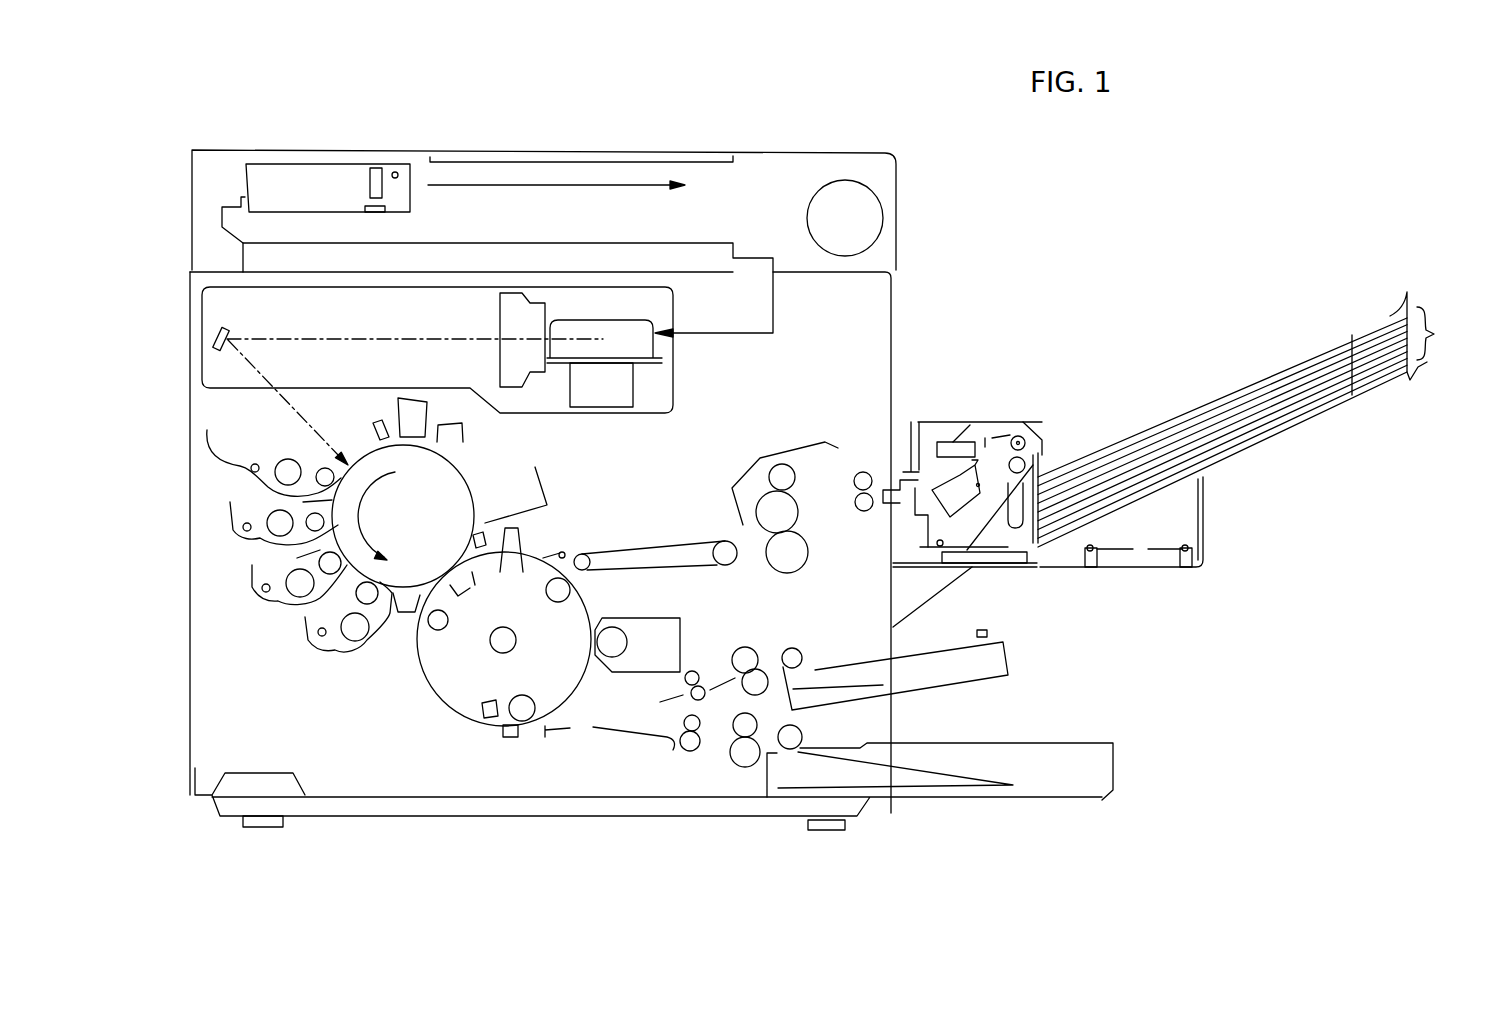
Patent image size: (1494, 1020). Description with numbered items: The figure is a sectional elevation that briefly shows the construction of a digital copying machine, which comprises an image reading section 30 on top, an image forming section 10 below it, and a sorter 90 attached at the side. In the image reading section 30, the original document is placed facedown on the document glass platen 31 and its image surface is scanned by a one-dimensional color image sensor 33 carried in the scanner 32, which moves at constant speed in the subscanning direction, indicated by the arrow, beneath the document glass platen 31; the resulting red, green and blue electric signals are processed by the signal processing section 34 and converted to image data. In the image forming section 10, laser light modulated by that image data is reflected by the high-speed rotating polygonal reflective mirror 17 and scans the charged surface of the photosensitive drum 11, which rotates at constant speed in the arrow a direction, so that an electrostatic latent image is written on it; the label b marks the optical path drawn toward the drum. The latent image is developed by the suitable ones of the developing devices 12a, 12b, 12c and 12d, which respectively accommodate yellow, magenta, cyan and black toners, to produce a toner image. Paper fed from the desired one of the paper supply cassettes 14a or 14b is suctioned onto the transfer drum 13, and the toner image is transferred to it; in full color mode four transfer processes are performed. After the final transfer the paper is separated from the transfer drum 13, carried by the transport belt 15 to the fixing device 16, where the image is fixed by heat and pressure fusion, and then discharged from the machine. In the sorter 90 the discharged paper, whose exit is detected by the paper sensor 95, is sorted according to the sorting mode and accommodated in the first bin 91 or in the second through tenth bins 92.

The image forming section 10 is at (657, 527).
The photosensitive drum 11 is at (427, 541).
The developing device 12a is at (274, 451).
The developing device 12b is at (223, 527).
The developing device 12c is at (245, 587).
The developing device 12d is at (352, 655).
The transfer drum 13 is at (448, 707).
The paper supply cassette 14a is at (997, 658).
The paper supply cassette 14b is at (1060, 757).
The transport belt 15 is at (650, 570).
The fixing device 16 is at (752, 460).
The polygonal reflective mirror 17 is at (640, 342).
The image reading section 30 is at (763, 224).
The document glass platen 31 is at (660, 158).
The scanner 32 is at (275, 164).
The one-dimensional color image sensor 33 is at (377, 212).
The signal processing section 34 is at (553, 250).
The sorter 90 is at (1170, 399).
The first bin 91 is at (1302, 360).
The second through tenth bins 92 is at (1445, 333).
The paper sensor 95 is at (968, 520).
The arrow a direction a is at (382, 507).
The optical path b is at (268, 378).